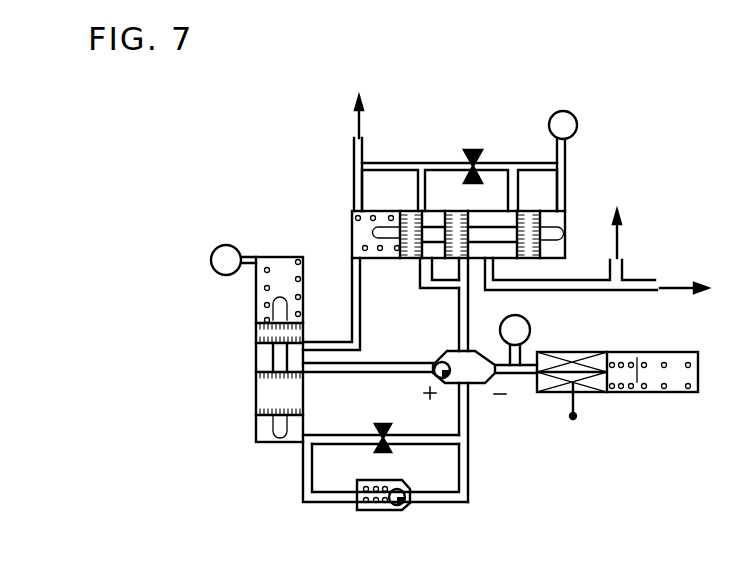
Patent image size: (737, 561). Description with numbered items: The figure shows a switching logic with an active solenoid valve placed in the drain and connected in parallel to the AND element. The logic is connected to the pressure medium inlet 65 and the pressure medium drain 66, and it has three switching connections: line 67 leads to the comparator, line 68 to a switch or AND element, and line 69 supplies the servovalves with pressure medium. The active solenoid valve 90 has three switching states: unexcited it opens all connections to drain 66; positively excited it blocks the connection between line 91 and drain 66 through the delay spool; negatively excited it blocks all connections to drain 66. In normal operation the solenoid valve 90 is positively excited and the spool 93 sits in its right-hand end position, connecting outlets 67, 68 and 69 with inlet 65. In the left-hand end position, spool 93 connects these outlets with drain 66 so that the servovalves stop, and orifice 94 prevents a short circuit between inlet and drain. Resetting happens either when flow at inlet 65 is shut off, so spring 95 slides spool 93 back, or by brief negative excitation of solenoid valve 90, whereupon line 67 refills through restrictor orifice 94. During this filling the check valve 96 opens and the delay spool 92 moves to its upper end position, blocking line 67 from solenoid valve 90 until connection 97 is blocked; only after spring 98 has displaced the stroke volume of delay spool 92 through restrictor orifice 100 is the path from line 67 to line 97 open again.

The pressure medium inlet 65 is at (549, 123).
The pressure medium drain 66 is at (225, 258).
The line 67 is at (358, 124).
The line 68 is at (617, 242).
The line 69 is at (673, 286).
The active solenoid valve 90 is at (468, 385).
The line 91 is at (356, 288).
The delay spool 92 is at (268, 398).
The spool 93 is at (548, 234).
The orifice 94 is at (472, 150).
The spring 95 is at (356, 216).
The check valve 96 is at (405, 505).
The connection 97 is at (383, 368).
The spring 98 is at (265, 305).
The restrictor orifice 100 is at (390, 424).